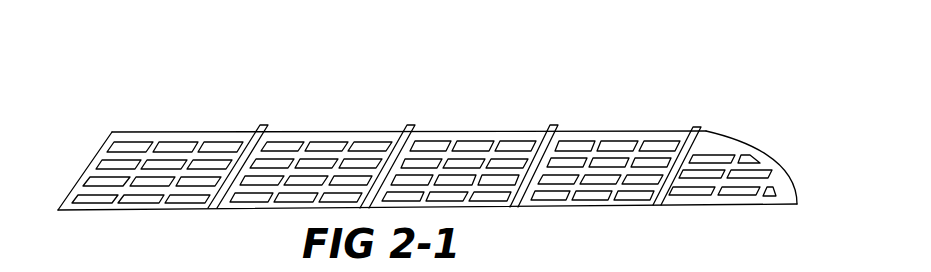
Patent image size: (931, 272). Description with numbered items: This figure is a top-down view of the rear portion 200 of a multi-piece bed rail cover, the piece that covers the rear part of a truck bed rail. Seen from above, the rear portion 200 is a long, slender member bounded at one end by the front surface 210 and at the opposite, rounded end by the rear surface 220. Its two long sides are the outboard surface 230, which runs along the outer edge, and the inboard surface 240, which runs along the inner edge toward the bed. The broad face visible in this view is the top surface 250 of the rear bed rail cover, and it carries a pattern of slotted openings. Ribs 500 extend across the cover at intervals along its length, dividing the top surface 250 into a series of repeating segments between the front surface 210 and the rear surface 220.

The rear portion 200 is at (298, 66).
The front surface 210 is at (93, 158).
The rear surface 220 is at (797, 180).
The outboard surface 230 is at (615, 131).
The inboard surface 240 is at (470, 206).
The top surface 250 is at (722, 145).
The ribs 500 is at (264, 125).